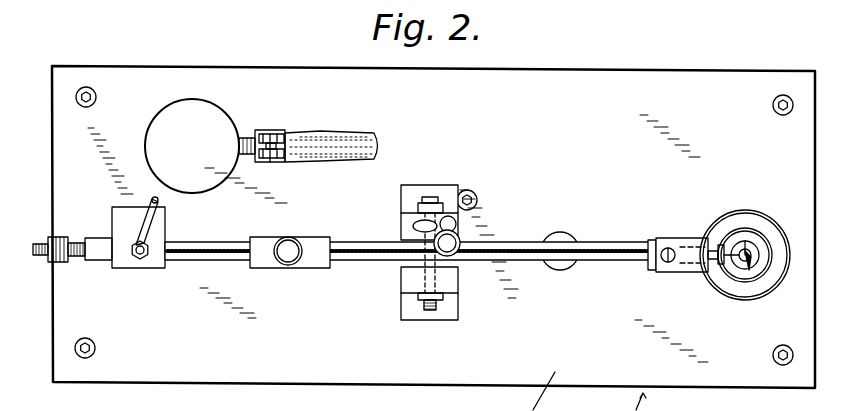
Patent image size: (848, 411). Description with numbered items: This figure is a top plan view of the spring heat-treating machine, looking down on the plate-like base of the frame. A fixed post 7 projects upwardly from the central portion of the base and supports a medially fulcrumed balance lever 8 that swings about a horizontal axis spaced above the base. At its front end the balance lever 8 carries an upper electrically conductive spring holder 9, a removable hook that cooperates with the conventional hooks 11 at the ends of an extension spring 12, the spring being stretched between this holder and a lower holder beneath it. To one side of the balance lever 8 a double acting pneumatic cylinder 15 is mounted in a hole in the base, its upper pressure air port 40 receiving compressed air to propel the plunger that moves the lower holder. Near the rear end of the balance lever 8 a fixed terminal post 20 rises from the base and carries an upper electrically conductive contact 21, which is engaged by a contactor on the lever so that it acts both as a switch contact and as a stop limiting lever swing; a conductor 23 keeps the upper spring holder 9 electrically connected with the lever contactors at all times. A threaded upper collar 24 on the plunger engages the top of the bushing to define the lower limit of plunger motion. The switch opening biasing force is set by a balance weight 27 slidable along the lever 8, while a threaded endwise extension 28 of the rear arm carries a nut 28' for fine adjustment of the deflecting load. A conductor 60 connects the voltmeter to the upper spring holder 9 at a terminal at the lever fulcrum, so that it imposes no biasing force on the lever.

The fixed post 7 is at (410, 276).
The balance lever 8 is at (515, 242).
The upper electrically conductive spring holder 9 is at (741, 240).
The hooks 11 is at (757, 266).
The extension spring 12 is at (756, 240).
The pneumatic cylinder 15 is at (211, 112).
The fixed terminal post 20 is at (124, 268).
The upper electrically conductive contact 21 is at (143, 262).
The conductor 23 is at (583, 262).
The upper collar 24 is at (728, 218).
The balance weight 27 is at (309, 238).
The threaded endwise extension 28 is at (63, 275).
The nut 28' is at (42, 230).
The upper pressure air port 40 is at (248, 130).
The conductor 60 is at (458, 256).